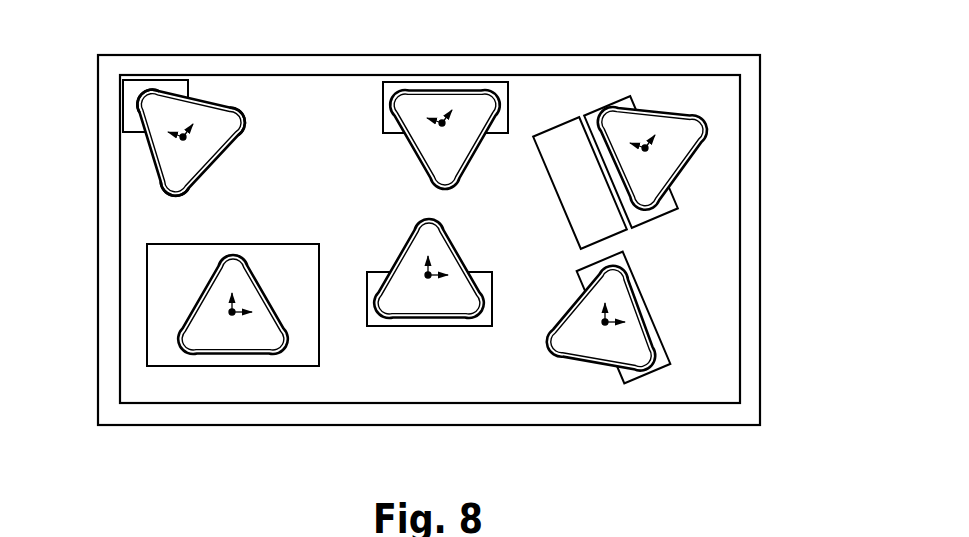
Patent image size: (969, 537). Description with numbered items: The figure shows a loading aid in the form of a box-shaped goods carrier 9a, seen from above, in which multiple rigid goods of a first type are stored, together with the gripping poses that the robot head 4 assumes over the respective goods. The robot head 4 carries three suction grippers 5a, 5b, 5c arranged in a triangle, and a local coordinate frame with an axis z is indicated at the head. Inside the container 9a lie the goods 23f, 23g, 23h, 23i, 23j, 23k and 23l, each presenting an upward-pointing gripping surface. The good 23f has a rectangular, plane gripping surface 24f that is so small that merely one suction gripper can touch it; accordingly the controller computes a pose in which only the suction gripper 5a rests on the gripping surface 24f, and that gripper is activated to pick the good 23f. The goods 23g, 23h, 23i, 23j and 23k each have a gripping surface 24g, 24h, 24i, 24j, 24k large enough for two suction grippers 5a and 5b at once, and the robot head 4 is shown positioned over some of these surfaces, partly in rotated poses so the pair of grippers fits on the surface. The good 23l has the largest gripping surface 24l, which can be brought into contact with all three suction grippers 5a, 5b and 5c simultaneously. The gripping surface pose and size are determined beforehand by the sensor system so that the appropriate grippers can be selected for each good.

The goods carrier 9a is at (748, 150).
The robot head 4 is at (200, 157).
The z-axis z is at (190, 135).
The suction gripper 5a is at (166, 87).
The suction gripper 5b is at (247, 115).
The suction gripper 5c is at (157, 187).
The good 23f is at (121, 116).
The gripping surface 24f is at (179, 132).
The good 23g is at (386, 135).
The gripping surface 24g is at (430, 82).
The good 23h is at (543, 183).
The gripping surface 24h is at (567, 140).
The good 23i is at (677, 197).
The gripping surface 24i is at (628, 95).
The good 23j is at (672, 348).
The gripping surface 24j is at (630, 375).
The good 23k is at (423, 330).
The gripping surface 24k is at (445, 320).
The good 23l is at (180, 372).
The gripping surface 24l is at (162, 332).